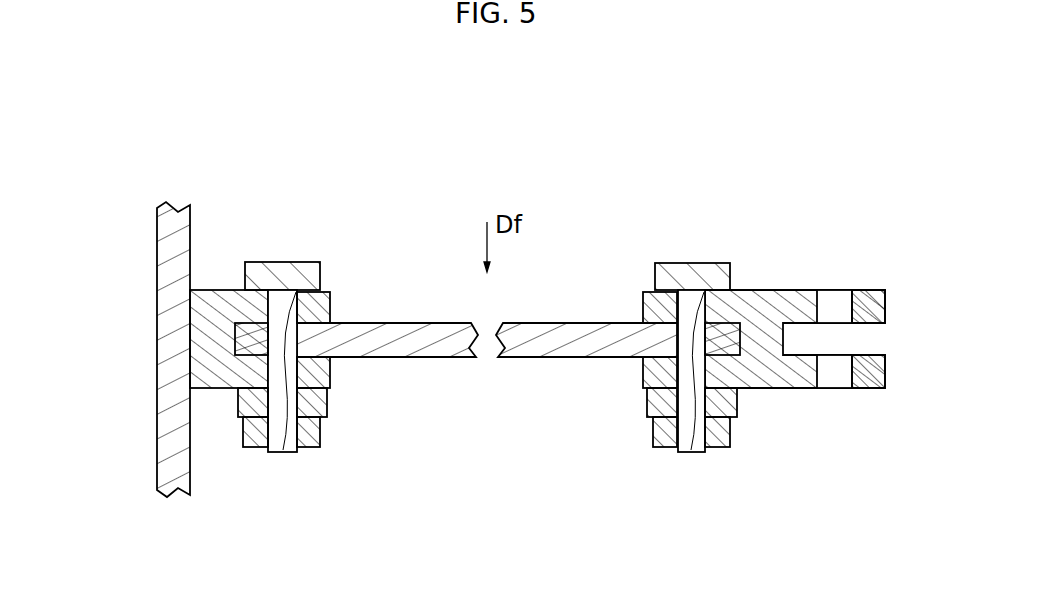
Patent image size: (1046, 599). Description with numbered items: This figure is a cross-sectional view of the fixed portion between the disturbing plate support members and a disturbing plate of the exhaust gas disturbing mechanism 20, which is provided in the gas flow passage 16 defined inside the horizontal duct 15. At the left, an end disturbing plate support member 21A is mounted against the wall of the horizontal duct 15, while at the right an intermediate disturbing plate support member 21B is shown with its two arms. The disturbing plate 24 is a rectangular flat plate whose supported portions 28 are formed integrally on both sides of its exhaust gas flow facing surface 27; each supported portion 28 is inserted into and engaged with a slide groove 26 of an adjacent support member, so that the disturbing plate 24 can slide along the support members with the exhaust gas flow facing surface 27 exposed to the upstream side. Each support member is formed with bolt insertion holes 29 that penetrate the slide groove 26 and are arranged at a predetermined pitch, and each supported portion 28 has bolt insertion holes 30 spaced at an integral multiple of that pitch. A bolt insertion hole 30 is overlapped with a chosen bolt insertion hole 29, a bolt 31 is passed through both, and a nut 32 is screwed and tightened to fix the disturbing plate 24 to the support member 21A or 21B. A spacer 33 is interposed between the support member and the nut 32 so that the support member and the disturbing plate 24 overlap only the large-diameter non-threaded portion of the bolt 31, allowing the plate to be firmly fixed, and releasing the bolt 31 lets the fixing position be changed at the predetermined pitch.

The horizontal duct 15 is at (157, 256).
The gas flow passage 16 is at (478, 437).
The exhaust gas disturbing mechanism 20 is at (572, 182).
The disturbing plate support member at both ends 21A is at (208, 290).
The intermediate disturbing plate support member 21B is at (762, 290).
The disturbing plate 24 is at (538, 333).
The slide groove 26 is at (350, 322).
The exhaust gas flow facing surface 27 is at (403, 322).
The supported portion 28 is at (238, 338).
The bolt insertion hole 29 is at (240, 400).
The bolt insertion hole 30 is at (330, 372).
The bolt 31 is at (271, 262).
The nut 32 is at (322, 432).
The spacer 33 is at (327, 402).